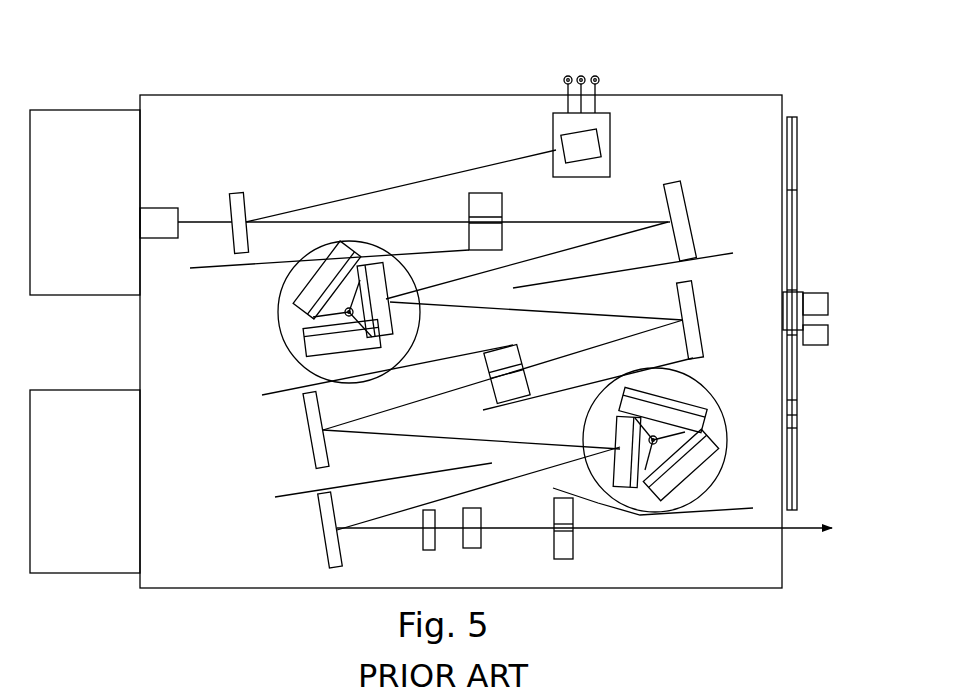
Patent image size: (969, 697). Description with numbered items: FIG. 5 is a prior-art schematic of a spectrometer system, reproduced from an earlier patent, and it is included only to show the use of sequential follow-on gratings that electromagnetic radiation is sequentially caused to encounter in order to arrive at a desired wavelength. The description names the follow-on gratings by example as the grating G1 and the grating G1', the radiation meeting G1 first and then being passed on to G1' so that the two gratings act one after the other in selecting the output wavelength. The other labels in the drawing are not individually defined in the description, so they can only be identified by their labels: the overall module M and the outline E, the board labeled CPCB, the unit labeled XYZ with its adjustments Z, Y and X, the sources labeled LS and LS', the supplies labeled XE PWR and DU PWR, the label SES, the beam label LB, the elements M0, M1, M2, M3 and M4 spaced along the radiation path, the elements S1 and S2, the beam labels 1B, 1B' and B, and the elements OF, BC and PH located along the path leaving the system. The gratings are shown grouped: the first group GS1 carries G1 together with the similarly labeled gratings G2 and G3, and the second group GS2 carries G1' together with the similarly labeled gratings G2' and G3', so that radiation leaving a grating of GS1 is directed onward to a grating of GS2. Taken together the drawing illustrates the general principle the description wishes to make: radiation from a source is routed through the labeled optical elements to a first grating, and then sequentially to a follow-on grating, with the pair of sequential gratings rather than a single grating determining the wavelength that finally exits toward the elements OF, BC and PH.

The measuring module M is at (444, 300).
The enclosure E is at (757, 87).
The control printed circuit board CPCB is at (808, 160).
The XYZ positioning stage XYZ is at (630, 115).
The light source (alternative) LS' is at (581, 146).
The light source LS is at (159, 223).
The xenon lamp power supply XE PWR is at (85, 202).
The deuterium lamp power supply DU PWR is at (85, 481).
The spectrometer enclosure structure SES is at (163, 338).
The Z axis adjustment Z is at (563, 83).
The Y axis adjustment Y is at (581, 83).
The X axis adjustment X is at (599, 83).
The light beam LB is at (468, 171).
The mirror M0 is at (235, 198).
The mirror M1 is at (695, 214).
The mirror M2 is at (706, 318).
The mirror M3 is at (302, 428).
The mirror M4 is at (318, 528).
The slit S1 is at (505, 212).
The slit S2 is at (527, 356).
The first-order diffracted beam 1B is at (539, 367).
The first-order diffracted beam (second stage) 1B' is at (478, 488).
The zero-order beam B is at (204, 267).
The grating stage 1 GS1 is at (301, 312).
The grating stage 2 GS2 is at (678, 436).
The grating G1 is at (384, 300).
The grating G2 is at (327, 280).
The grating G3 is at (342, 342).
The follow-on grating G1' is at (614, 451).
The grating G2' is at (680, 465).
The grating G3' is at (663, 409).
The optical filter OF is at (419, 532).
The beam chopper BC is at (463, 537).
The pinhole PH is at (578, 541).